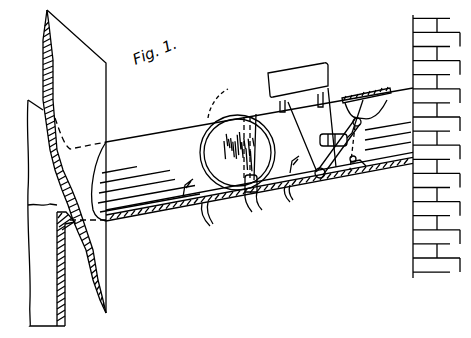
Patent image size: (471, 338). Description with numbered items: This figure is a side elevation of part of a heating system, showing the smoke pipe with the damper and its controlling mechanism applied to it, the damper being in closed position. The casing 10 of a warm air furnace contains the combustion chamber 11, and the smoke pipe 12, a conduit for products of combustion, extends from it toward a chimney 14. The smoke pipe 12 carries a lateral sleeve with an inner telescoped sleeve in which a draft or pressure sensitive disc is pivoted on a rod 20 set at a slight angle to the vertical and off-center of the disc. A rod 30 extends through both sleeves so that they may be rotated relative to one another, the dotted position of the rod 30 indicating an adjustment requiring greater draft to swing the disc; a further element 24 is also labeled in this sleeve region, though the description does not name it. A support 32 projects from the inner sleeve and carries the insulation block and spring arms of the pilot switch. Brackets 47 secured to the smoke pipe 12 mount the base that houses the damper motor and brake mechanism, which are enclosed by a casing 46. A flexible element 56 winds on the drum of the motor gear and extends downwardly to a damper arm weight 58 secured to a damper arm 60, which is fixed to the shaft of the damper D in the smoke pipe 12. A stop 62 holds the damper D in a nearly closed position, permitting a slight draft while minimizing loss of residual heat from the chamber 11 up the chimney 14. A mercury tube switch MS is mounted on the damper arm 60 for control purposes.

The casing 10 is at (98, 251).
The combustion chamber 11 is at (48, 295).
The smoke pipe 12 is at (147, 145).
The chimney 14 is at (415, 237).
The rod 20 is at (253, 118).
The ring 24 is at (201, 148).
The rod 30 is at (233, 118).
The support 32 is at (258, 192).
The casing 46 is at (295, 72).
The brackets 47 is at (323, 93).
The flexible element 56 is at (297, 108).
The damper arm weight 58 is at (320, 179).
The damper arm 60 is at (343, 183).
The stop 62 is at (367, 172).
The mercury tube switch MS is at (326, 133).
The damper D is at (370, 112).